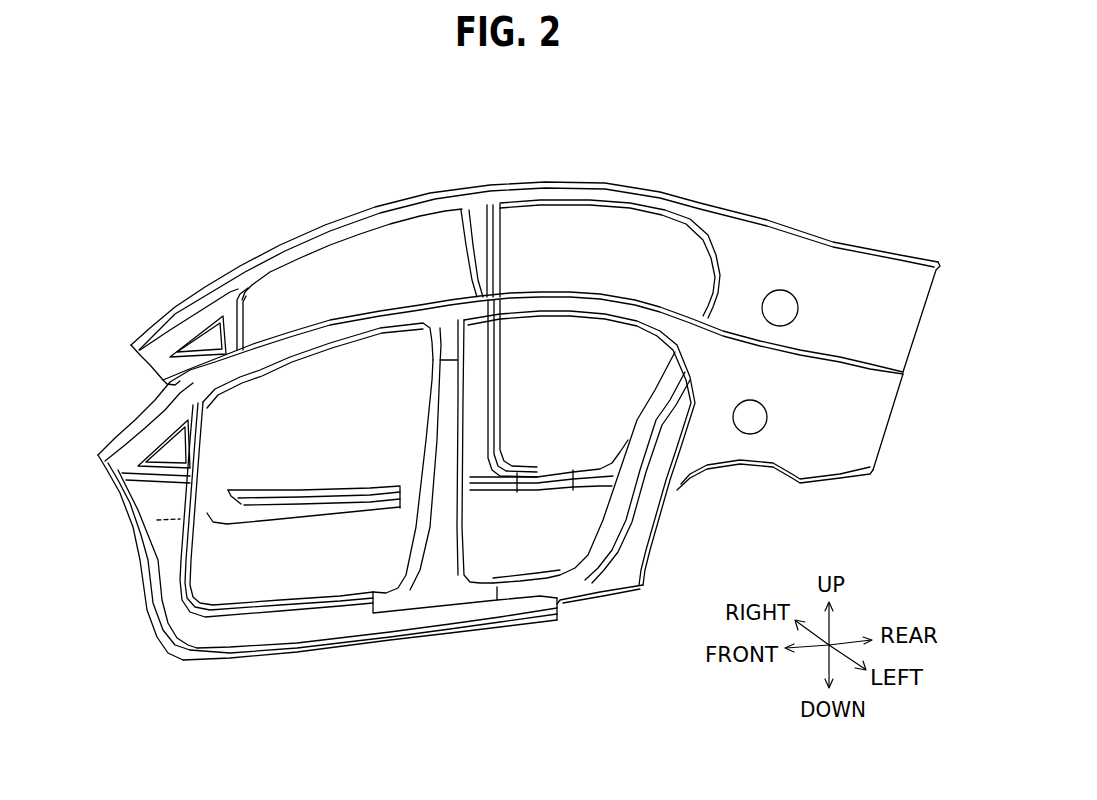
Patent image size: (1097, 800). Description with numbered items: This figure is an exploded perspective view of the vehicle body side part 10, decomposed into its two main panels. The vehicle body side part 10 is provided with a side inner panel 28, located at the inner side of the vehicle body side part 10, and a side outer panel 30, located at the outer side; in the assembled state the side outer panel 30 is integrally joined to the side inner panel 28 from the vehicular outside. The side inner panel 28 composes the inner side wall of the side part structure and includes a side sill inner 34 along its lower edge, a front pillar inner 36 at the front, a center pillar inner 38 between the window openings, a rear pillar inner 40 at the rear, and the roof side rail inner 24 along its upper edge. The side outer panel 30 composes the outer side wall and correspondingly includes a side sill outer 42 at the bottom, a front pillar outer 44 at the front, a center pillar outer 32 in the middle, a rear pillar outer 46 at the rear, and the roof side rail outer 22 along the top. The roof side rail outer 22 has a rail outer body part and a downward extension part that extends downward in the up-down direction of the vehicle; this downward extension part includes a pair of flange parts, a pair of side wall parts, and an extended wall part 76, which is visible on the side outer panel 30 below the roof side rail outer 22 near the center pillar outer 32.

The vehicle body side part 10 is at (514, 412).
The roof side rail outer 22 is at (533, 321).
The roof side rail inner 24 is at (534, 251).
The side inner panel 28 is at (519, 271).
The side outer panel 30 is at (496, 475).
The center pillar outer 32 is at (432, 456).
The side sill inner 34 is at (303, 528).
The front pillar inner 36 is at (173, 343).
The center pillar inner 38 is at (455, 250).
The rear pillar inner 40 is at (636, 477).
The side sill outer 42 is at (413, 641).
The front pillar outer 44 is at (143, 540).
The rear pillar outer 46 is at (769, 498).
The extended wall part 76 is at (518, 388).